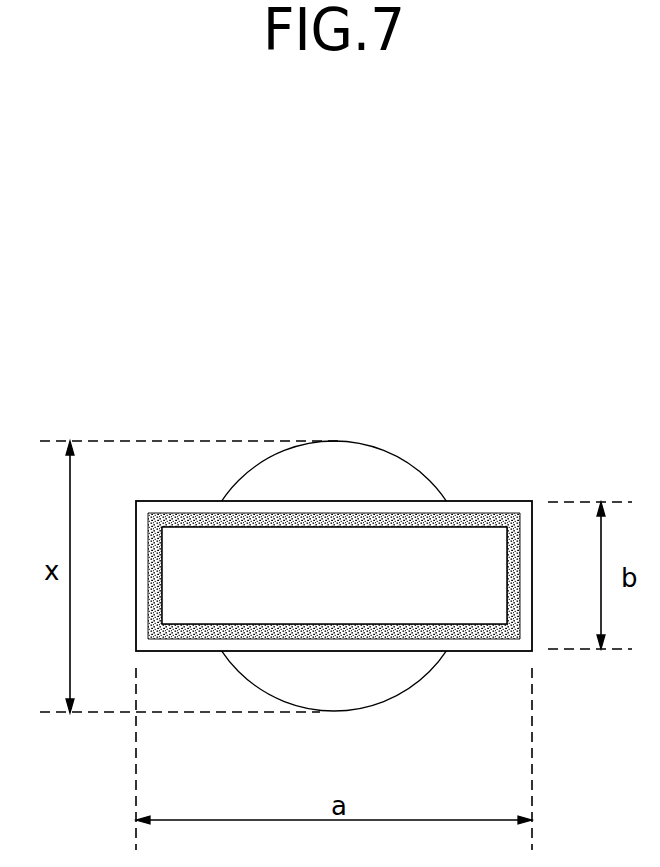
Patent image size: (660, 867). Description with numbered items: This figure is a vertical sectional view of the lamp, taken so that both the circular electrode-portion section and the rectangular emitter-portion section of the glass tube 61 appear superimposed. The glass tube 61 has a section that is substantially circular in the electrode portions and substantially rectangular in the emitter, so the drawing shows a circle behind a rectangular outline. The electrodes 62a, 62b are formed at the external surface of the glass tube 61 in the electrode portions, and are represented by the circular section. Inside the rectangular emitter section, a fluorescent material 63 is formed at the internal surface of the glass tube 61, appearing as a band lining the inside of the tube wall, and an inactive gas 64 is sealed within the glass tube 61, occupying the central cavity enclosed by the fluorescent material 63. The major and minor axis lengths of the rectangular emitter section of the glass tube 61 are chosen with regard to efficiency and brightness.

The glass tube 61 is at (523, 508).
The electrode 62a is at (379, 557).
The electrode 62b is at (393, 467).
The fluorescent material 63 is at (515, 590).
The inactive gas 64 is at (477, 573).